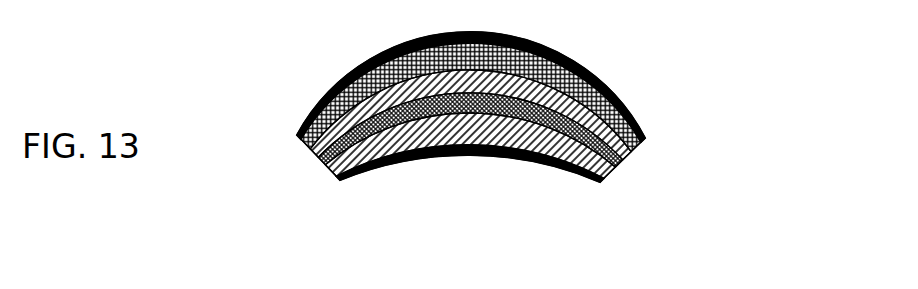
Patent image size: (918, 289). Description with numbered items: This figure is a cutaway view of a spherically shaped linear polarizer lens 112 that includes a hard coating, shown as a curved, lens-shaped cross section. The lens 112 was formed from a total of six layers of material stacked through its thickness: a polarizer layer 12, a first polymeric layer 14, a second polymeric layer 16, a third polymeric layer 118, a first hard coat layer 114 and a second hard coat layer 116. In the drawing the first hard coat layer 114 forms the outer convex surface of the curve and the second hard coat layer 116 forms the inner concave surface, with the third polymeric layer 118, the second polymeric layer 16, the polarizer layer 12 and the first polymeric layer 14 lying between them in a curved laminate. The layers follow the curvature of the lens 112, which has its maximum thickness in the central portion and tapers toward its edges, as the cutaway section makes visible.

The lens 112 is at (743, 118).
The first hard coat layer 114 is at (620, 102).
The third polymeric layer 118 is at (638, 143).
The second polymeric layer 16 is at (315, 160).
The polarizer layer 12 is at (320, 167).
The first polymeric layer 14 is at (328, 177).
The second hard coat layer 116 is at (587, 175).